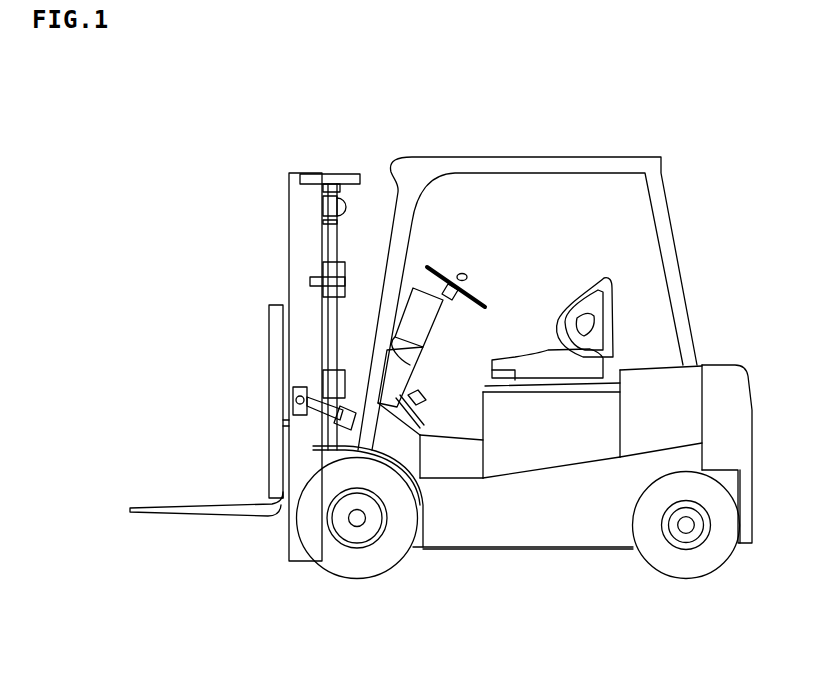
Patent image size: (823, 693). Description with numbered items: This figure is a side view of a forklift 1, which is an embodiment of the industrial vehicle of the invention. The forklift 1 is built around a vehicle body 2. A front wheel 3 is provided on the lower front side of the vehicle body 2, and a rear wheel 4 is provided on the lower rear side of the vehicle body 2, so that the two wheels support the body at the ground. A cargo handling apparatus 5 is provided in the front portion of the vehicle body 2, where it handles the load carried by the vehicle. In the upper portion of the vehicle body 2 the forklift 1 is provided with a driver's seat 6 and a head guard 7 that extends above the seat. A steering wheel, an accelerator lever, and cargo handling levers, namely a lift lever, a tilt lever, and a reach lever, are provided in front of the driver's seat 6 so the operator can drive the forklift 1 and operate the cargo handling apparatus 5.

The forklift 1 is at (477, 94).
The vehicle body 2 is at (527, 550).
The front wheel 3 is at (365, 565).
The rear wheel 4 is at (692, 562).
The cargo handling apparatus 5 is at (303, 218).
The driver's seat 6 is at (600, 305).
The head guard 7 is at (587, 165).